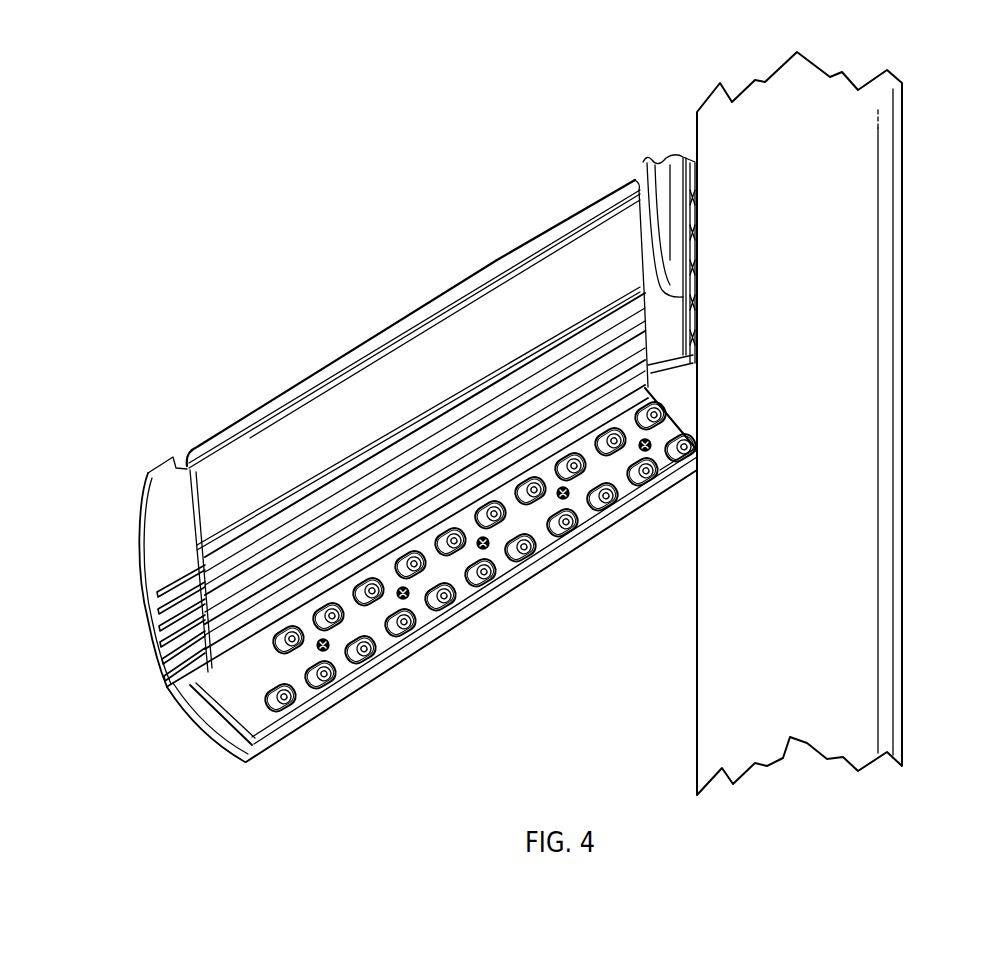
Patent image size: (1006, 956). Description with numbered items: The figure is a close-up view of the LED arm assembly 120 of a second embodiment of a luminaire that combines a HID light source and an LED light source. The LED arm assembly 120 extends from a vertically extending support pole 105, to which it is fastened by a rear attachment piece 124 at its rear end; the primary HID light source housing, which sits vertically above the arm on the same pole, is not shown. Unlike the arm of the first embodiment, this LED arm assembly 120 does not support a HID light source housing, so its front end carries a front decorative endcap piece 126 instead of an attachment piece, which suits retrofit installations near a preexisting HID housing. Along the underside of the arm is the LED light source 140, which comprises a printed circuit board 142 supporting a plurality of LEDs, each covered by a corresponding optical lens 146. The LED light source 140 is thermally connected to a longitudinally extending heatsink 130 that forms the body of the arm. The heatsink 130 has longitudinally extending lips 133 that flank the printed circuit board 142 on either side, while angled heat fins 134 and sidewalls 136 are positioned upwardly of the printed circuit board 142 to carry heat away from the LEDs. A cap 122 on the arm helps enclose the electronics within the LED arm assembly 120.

The vertically extending support pole 105 is at (862, 256).
The LED arm assembly 120 is at (392, 180).
The cap 122 is at (567, 217).
The rear attachment piece 124 is at (665, 180).
The front decorative endcap piece 126 is at (143, 553).
The longitudinally extending heatsink 130 is at (292, 330).
The longitudinally extending lips 133 is at (676, 488).
The angled heat fins 134 is at (343, 507).
The sidewalls 136 is at (420, 363).
The LED light source 140 is at (412, 713).
The printed circuit board 142 is at (463, 588).
The optical lens 146 is at (532, 552).